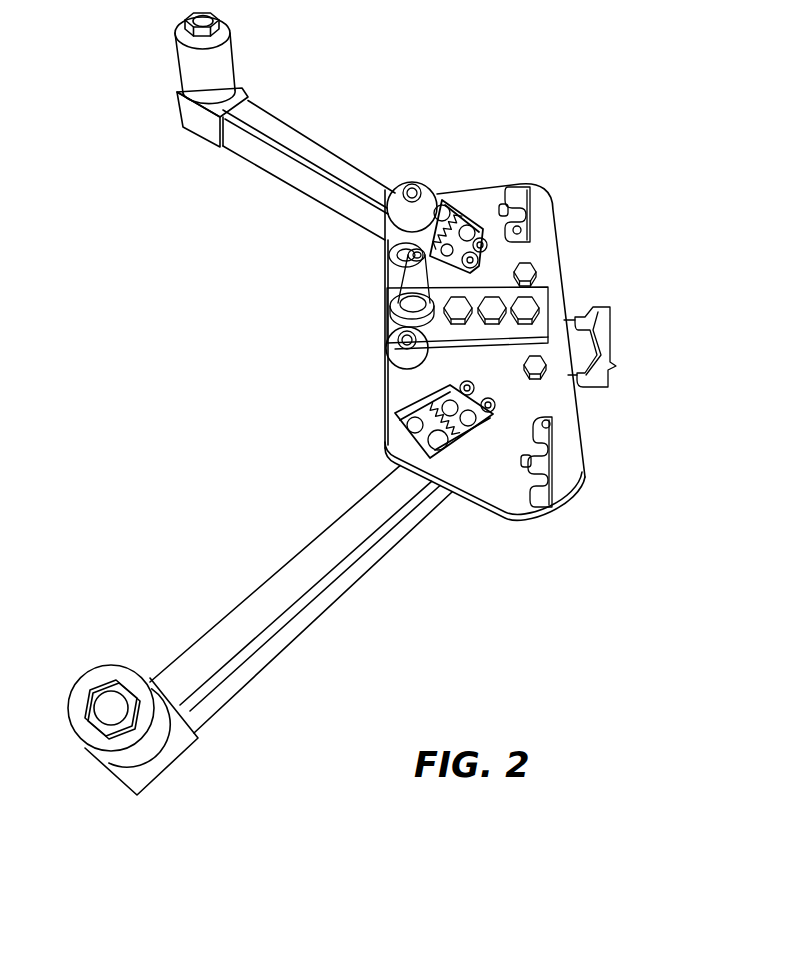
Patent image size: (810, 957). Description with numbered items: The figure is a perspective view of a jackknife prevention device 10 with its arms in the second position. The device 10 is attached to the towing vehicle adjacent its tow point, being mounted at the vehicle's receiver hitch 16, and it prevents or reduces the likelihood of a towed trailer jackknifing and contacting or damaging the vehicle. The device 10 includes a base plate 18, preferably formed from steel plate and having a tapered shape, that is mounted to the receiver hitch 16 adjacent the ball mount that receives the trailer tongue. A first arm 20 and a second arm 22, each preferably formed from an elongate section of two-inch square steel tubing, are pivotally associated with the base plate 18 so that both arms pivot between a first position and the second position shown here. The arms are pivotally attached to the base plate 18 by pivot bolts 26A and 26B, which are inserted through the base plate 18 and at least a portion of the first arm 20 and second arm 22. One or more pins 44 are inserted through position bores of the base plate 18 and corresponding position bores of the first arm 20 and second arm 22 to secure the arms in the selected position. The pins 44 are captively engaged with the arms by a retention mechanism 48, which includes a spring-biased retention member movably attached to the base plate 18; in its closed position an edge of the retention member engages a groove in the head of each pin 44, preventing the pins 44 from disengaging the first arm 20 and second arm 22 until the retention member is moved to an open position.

The jackknife prevention device 10 is at (592, 199).
The receiver hitch 16 is at (605, 330).
The base plate 18 is at (400, 393).
The first arm 20 is at (270, 607).
The second arm 22 is at (282, 172).
The pivot bolt 26A is at (543, 375).
The pivot bolt 26B is at (536, 271).
The pins 44 is at (427, 452).
The retention mechanism 48 is at (463, 207).